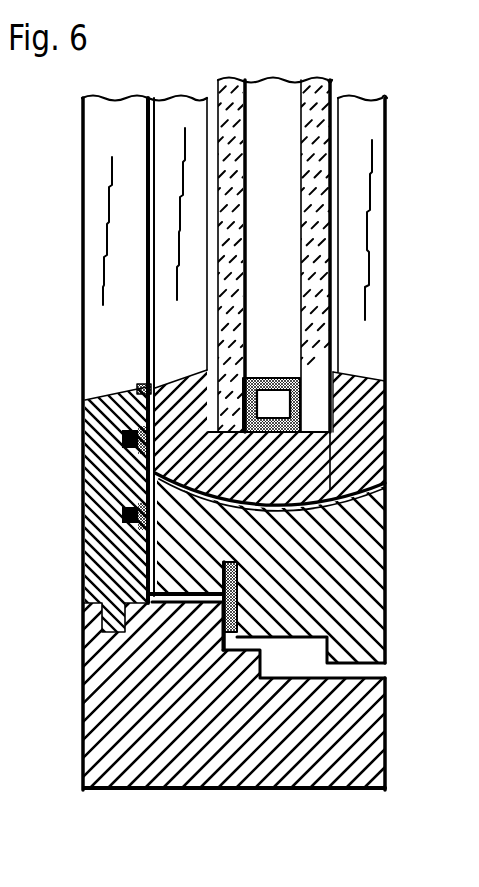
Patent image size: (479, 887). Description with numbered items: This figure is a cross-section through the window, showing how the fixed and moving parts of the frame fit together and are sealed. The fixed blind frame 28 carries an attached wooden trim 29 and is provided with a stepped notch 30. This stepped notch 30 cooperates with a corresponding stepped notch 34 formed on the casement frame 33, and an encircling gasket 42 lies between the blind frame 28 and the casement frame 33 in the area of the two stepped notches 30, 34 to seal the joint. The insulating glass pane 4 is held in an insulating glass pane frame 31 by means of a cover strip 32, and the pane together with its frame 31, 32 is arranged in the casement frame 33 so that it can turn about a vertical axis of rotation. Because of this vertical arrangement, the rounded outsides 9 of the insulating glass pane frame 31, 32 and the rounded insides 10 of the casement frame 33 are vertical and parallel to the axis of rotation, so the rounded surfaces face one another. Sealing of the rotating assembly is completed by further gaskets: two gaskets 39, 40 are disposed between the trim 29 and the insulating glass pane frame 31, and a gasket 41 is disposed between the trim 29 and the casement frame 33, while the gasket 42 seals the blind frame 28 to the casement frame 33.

The insulating glass pane 4 is at (315, 228).
The rounded outsides 9 is at (297, 487).
The rounded insides 10 is at (340, 505).
The blind frame 28 is at (197, 712).
The wooden trim 29 is at (115, 468).
The stepped notch 30 is at (250, 641).
The insulating glass pane frame 31 is at (195, 395).
The cover strip 32 is at (353, 390).
The casement frame 33 is at (357, 615).
The stepped notch 34 is at (143, 596).
The gasket 39 is at (123, 430).
The gasket 40 is at (145, 388).
The gasket 41 is at (123, 510).
The encircling gasket 42 is at (223, 625).